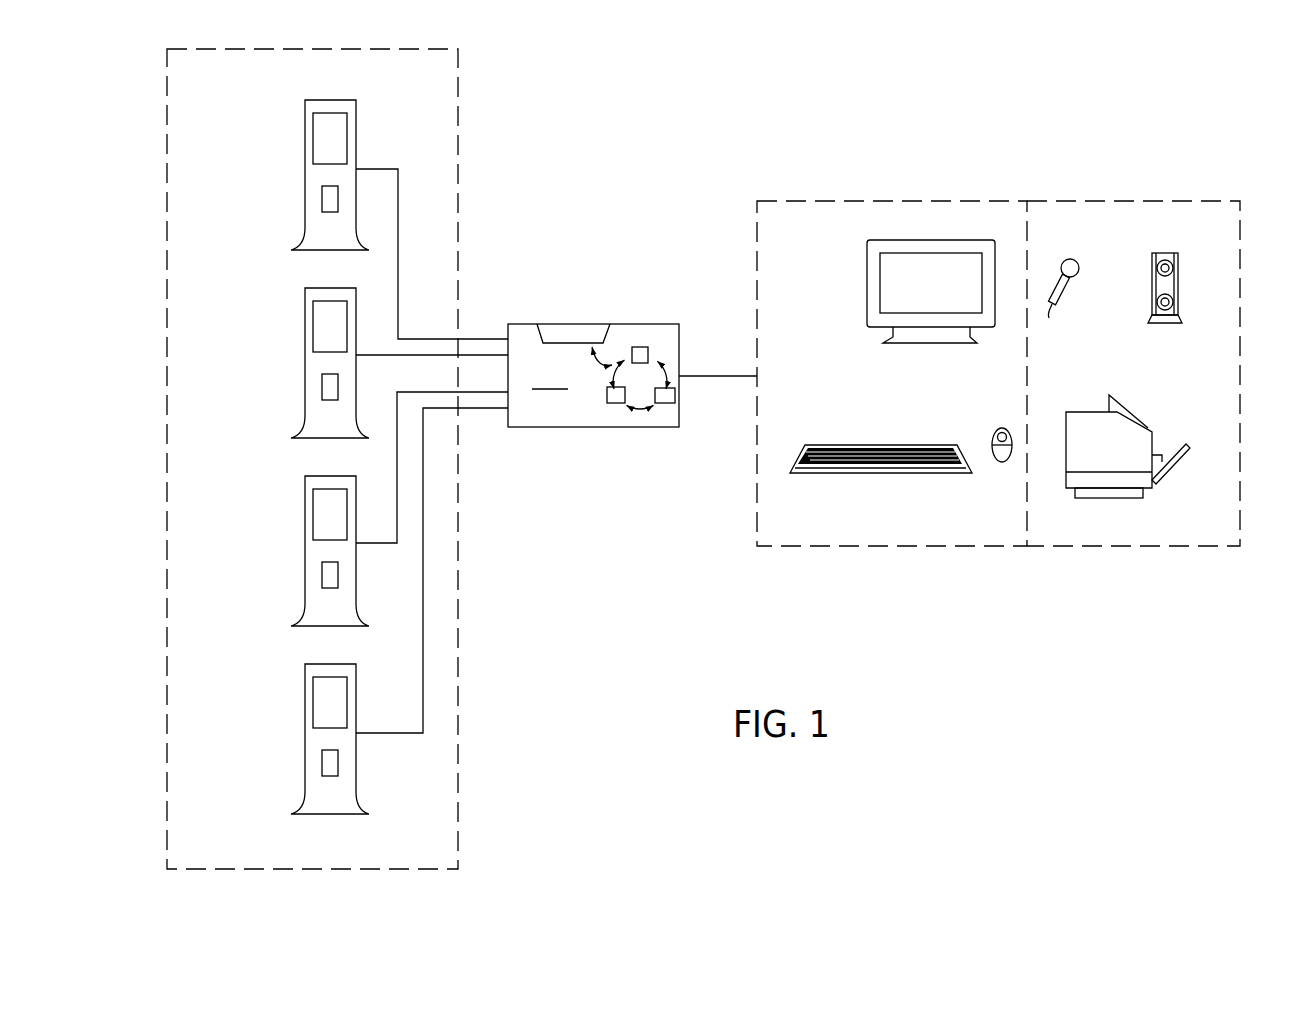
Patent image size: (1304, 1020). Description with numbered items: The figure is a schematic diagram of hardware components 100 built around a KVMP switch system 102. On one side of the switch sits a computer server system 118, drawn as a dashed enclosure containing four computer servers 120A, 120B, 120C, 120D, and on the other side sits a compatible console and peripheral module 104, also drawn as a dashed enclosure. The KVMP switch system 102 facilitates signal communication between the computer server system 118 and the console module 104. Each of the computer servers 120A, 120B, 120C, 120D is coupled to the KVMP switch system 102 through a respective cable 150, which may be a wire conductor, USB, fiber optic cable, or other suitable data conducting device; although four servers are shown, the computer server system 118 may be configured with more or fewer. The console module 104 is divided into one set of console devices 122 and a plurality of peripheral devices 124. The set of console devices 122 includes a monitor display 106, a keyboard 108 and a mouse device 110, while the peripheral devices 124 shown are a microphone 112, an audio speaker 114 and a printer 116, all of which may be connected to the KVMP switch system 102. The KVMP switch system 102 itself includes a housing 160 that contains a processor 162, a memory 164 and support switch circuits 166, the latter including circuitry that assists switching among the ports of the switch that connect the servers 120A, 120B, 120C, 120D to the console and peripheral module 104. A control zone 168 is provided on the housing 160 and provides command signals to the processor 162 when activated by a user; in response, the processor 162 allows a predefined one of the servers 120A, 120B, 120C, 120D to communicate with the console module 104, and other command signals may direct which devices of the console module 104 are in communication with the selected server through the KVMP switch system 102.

The hardware components 100 is at (888, 123).
The KVMP switch system 102 is at (632, 345).
The console and peripheral module 104 is at (1013, 153).
The monitor display 106 is at (932, 240).
The keyboard 108 is at (875, 473).
The mouse device 110 is at (1002, 462).
The microphone 112 is at (1078, 260).
The audio speaker 114 is at (1165, 253).
The printer 116 is at (1115, 498).
The computer server system 118 is at (400, 49).
The computer server 120A is at (305, 129).
The computer server 120B is at (305, 316).
The computer server 120C is at (305, 502).
The computer server 120D is at (305, 691).
The set of console devices 122 is at (822, 250).
The peripheral devices 124 is at (1217, 233).
The cable 150 is at (443, 352).
The housing 160 is at (578, 400).
The processor 162 is at (642, 347).
The memory 164 is at (675, 402).
The support switch circuits 166 is at (608, 400).
The control zone 168 is at (543, 318).